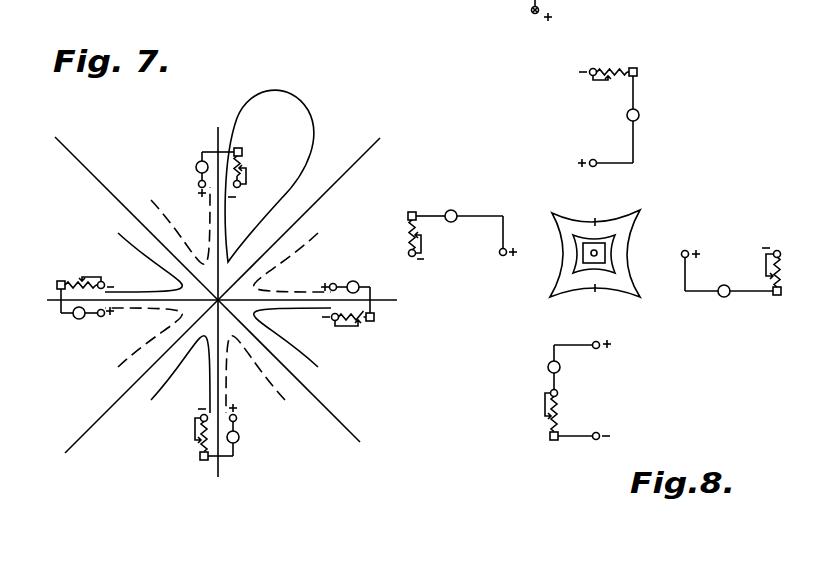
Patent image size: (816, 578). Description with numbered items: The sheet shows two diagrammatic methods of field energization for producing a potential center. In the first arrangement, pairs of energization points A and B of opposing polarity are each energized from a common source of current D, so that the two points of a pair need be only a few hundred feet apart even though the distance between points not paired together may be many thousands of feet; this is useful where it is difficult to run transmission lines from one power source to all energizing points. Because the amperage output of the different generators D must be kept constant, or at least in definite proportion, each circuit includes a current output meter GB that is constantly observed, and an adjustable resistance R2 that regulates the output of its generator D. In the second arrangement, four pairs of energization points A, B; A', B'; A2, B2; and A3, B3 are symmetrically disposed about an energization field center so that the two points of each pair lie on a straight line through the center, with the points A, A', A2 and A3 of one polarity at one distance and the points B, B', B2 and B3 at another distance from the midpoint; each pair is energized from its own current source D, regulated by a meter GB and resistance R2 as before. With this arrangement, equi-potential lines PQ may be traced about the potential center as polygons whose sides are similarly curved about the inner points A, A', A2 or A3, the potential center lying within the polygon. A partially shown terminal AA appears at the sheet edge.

In FIG. 7, the source of current D is at (242, 150).
In FIG. 8, the source of current D is at (637, 74).
In FIG. 7, the current output meter GB is at (196, 167).
In FIG. 8, the current output meter GB is at (639, 116).
In FIG. 7, the energization point A is at (216, 308).
In FIG. 8, the energization point A is at (589, 153).
In FIG. 7, the energization point B is at (218, 305).
In FIG. 8, the energization point B is at (584, 85).
In FIG. 7, the resistance R2 is at (242, 167).
In FIG. 8, the resistance R2 is at (620, 70).
In FIG. 8, the energization point A' is at (692, 243).
In FIG. 8, the energization point B' is at (771, 257).
In FIG. 8, the energization point A2 is at (607, 354).
In FIG. 8, the energization point B2 is at (602, 446).
In FIG. 8, the energization point A3 is at (505, 266).
In FIG. 8, the energization point B3 is at (416, 258).
In FIG. 8, the equi-potential line PQ is at (599, 246).
In FIG. 8, the terminal (partial, at sheet edge) AA is at (550, 10).